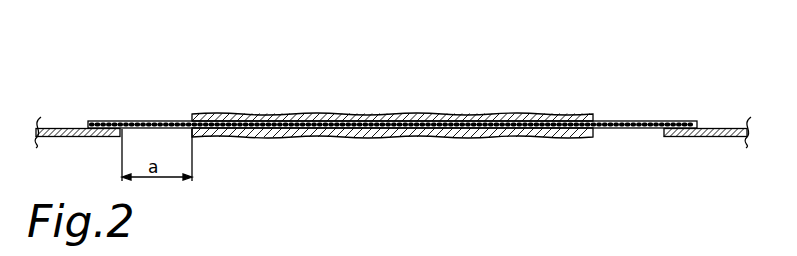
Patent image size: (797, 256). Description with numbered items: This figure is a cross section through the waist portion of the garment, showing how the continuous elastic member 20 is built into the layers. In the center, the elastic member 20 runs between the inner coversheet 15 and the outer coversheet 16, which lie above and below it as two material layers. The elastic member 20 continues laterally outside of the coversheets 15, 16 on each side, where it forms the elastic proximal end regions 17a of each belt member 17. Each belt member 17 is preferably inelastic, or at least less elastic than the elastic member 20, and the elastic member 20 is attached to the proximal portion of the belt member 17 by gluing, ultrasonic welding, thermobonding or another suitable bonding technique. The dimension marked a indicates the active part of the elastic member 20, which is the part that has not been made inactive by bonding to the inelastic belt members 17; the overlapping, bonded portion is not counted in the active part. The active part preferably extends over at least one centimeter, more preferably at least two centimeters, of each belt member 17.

The inner coversheet 15 is at (445, 113).
The outer coversheet 16 is at (377, 139).
The belt member 17 is at (68, 128).
The elastic proximal end region 17a is at (137, 122).
The elastic member 20 is at (628, 113).